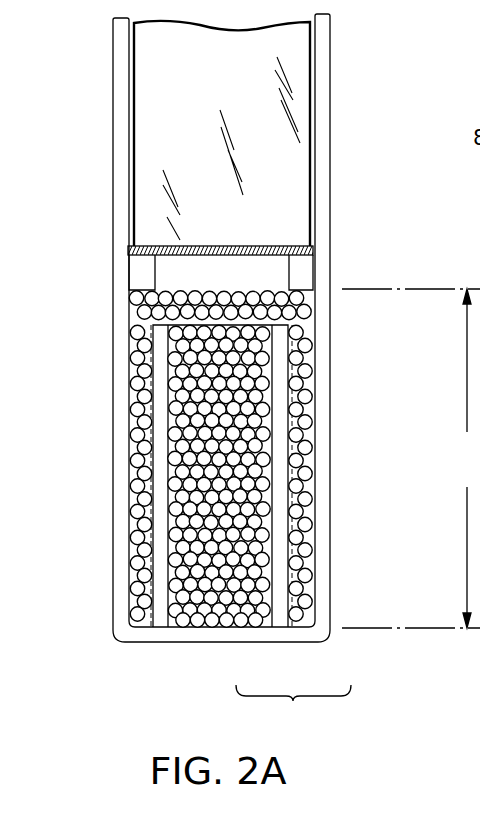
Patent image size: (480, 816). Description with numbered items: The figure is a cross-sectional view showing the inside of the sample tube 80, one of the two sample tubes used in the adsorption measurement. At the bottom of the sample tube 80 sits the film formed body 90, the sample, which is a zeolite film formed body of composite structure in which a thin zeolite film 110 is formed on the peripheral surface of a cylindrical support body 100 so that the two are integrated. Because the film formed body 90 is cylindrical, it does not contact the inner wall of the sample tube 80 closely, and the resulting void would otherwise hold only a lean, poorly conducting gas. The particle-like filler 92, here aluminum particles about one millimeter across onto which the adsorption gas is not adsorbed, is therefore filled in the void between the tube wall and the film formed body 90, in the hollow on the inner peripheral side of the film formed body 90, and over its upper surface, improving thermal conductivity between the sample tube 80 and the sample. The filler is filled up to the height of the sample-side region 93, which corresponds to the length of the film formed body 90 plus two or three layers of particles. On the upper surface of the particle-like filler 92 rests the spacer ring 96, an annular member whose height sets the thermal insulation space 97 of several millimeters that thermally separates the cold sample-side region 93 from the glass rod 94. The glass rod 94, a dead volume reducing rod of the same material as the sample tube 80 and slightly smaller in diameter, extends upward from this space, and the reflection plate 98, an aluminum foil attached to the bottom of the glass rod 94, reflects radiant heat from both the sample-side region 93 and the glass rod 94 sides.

The sample tube 80 is at (120, 130).
The glass rod 94 is at (283, 142).
The reflection plate 98 is at (318, 250).
The spacer ring 96 is at (305, 273).
The thermal insulation space 97 is at (201, 284).
The particle-like filler 92 is at (134, 408).
The sample-side region 93 is at (411, 458).
The support body 100 is at (280, 608).
The zeolite film 110 is at (303, 606).
The film formed body 90 is at (293, 707).